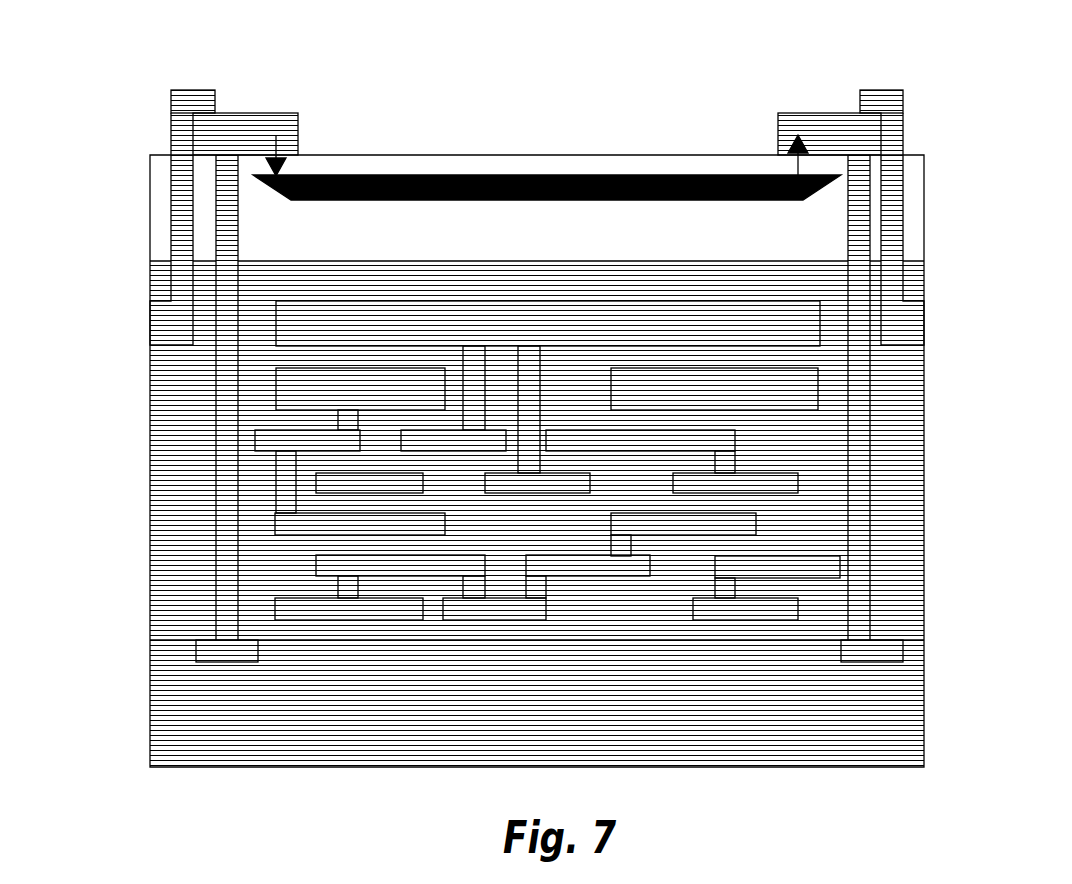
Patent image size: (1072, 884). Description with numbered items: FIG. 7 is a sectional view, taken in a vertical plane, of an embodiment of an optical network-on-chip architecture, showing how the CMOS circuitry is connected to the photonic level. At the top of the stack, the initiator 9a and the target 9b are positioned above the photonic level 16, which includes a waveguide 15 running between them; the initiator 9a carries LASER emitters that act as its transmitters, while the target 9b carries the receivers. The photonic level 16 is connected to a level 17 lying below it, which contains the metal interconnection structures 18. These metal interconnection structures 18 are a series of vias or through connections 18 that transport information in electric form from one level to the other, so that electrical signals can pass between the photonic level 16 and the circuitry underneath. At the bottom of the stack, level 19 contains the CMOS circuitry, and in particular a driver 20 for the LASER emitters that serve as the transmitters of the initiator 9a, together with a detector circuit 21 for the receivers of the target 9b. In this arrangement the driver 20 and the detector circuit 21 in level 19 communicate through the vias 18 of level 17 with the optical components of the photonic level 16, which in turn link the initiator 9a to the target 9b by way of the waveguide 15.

The initiator 9a is at (220, 117).
The target 9b is at (823, 130).
The waveguide 15 is at (483, 167).
The photonic level 16 is at (923, 153).
The level containing the metal interconnection structures 17 is at (923, 267).
The vias or through connections 18 is at (342, 580).
The level containing the CMOS circuitry 19 is at (923, 637).
The driver 20 is at (213, 653).
The detector circuit 21 is at (865, 650).